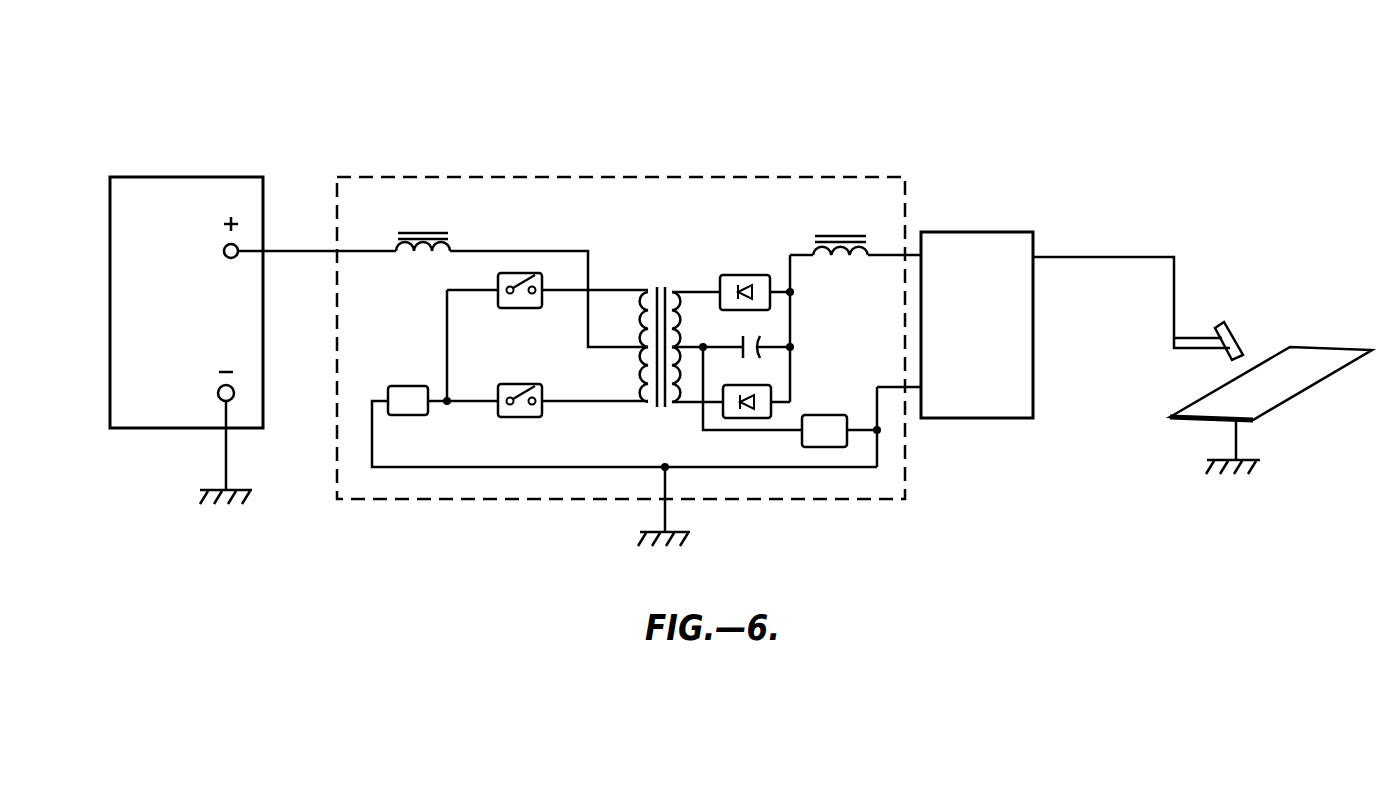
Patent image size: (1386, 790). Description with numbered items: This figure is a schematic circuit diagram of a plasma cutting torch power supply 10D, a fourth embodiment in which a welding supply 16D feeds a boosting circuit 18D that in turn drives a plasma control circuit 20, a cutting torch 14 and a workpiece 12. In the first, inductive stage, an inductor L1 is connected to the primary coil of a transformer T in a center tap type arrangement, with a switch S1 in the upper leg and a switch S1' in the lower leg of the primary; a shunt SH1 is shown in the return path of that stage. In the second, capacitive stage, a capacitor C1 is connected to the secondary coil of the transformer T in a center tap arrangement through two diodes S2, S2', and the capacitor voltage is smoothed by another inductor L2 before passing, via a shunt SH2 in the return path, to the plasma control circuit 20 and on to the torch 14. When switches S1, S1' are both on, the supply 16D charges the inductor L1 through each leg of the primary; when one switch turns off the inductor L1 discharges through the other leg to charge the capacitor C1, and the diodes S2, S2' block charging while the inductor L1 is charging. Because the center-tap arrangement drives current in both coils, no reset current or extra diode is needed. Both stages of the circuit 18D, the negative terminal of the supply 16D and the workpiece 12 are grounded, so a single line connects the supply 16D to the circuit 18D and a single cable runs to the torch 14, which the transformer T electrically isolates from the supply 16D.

The plasma cutting torch power supply 10D is at (262, 32).
The supply 16D is at (222, 177).
The circuit 18D is at (802, 176).
The plasma control circuit 20 is at (990, 232).
The cutting torch 14 is at (1226, 320).
The workpiece 12 is at (1180, 424).
The inductor L1 is at (423, 225).
The inductor L2 is at (840, 230).
The switch S1 is at (520, 306).
The switch S1' is at (520, 386).
The diode S2 is at (745, 277).
The diode S2' is at (739, 385).
The shunt SH1 is at (408, 385).
The shunt SH2 is at (824, 415).
The capacitor C1 is at (761, 336).
The transformer T is at (660, 333).